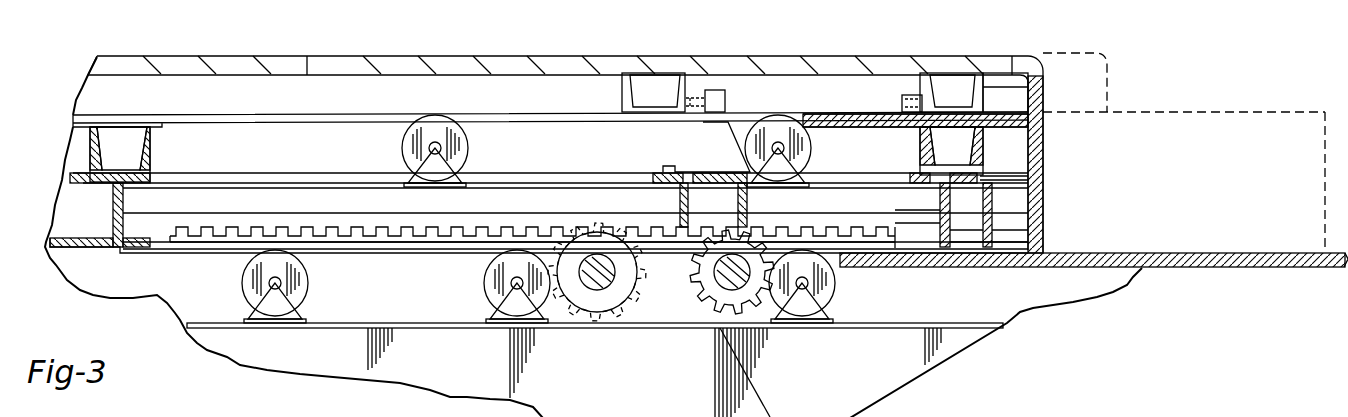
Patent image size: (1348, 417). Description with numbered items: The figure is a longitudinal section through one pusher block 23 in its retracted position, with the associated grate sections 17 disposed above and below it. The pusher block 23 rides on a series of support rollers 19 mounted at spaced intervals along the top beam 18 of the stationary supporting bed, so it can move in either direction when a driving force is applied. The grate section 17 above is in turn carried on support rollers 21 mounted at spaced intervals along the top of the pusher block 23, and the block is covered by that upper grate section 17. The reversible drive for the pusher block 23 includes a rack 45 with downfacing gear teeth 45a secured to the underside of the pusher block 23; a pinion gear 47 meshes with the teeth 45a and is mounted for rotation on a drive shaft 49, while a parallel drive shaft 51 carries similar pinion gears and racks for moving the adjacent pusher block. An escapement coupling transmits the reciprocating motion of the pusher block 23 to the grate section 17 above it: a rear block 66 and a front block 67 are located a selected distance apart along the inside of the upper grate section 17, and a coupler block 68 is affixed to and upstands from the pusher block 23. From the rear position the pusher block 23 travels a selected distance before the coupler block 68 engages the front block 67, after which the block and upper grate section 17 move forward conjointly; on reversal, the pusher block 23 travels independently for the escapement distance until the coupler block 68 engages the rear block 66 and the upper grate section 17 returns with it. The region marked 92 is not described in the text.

The grate section 17 is at (980, 44).
The top beam 18 is at (604, 389).
The support rollers 19 is at (302, 283).
The support rollers 21 is at (466, 148).
The pusher block 23 is at (1062, 145).
The rack 45 is at (532, 219).
The gear teeth 45a is at (407, 230).
The pinion gear 47 is at (718, 305).
The drive shaft 49 is at (722, 280).
The drive shaft 51 is at (606, 280).
The rear block 66 is at (694, 91).
The front block 67 is at (910, 95).
The coupler block 68 is at (697, 155).
The support member 92 is at (1197, 416).